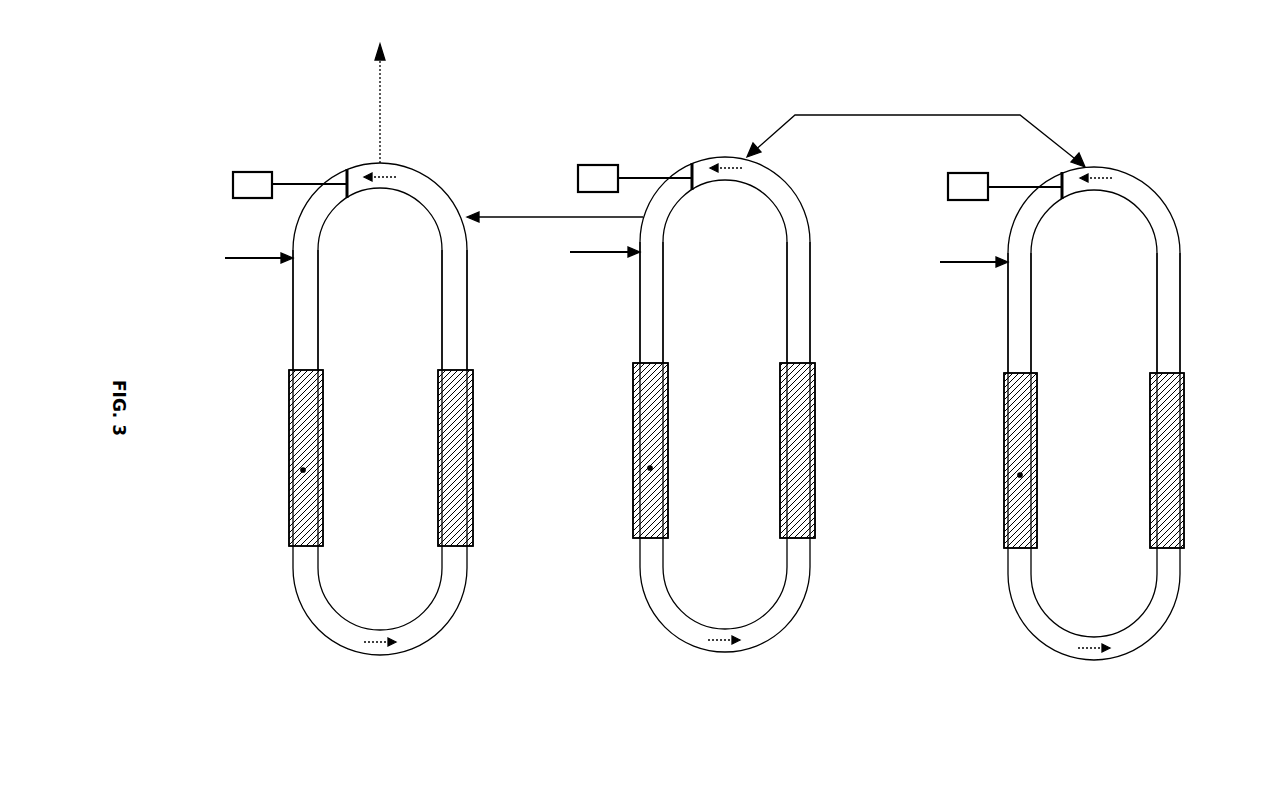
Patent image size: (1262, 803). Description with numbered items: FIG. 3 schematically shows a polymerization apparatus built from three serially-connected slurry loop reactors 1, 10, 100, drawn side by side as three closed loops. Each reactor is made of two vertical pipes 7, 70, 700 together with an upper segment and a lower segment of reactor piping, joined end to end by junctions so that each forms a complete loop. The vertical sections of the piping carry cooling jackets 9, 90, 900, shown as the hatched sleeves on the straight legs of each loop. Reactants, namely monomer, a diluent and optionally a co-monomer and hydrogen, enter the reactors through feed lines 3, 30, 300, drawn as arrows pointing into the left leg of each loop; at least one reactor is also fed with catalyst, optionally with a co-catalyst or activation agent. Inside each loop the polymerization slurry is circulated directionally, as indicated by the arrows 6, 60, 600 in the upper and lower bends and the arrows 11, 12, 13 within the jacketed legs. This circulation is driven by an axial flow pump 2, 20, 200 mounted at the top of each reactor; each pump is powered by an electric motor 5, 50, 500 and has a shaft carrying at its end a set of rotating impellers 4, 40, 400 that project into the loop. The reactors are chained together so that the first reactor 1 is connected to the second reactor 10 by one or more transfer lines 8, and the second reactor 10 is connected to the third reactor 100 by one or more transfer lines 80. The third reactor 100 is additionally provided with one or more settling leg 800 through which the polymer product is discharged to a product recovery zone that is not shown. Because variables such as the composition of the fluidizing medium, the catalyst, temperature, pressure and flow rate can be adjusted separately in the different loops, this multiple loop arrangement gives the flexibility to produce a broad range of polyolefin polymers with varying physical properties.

The first slurry loop reactor 1 is at (1014, 657).
The axial flow pump 2 is at (1015, 186).
The feed line 3 is at (970, 275).
The rotating impellers 4 is at (1062, 200).
The electric motor 5 is at (948, 188).
The arrow 6 is at (1100, 183).
The vertical pipes 7 is at (1020, 341).
The transfer line 8 is at (878, 115).
The cooling jacket 9 is at (1006, 514).
The arrow 11 is at (1010, 460).
The second slurry loop reactor 10 is at (645, 652).
The axial flow pump 20 is at (640, 177).
The feed line 30 is at (598, 266).
The rotating impellers 40 is at (692, 191).
The electric motor 50 is at (578, 179).
The arrow 60 is at (732, 174).
The vertical pipes 70 is at (652, 336).
The transfer line 80 is at (500, 216).
The cooling jacket 90 is at (636, 508).
The arrow 12 is at (645, 450).
The third slurry loop reactor 100 is at (300, 655).
The axial flow pump 200 is at (297, 183).
The feed line 300 is at (245, 272).
The rotating impellers 400 is at (347, 199).
The electric motor 500 is at (233, 186).
The arrow 600 is at (388, 182).
The vertical pipes 700 is at (305, 341).
The settling leg 800 is at (381, 82).
The cooling jacket 900 is at (292, 514).
The arrow 13 is at (296, 462).